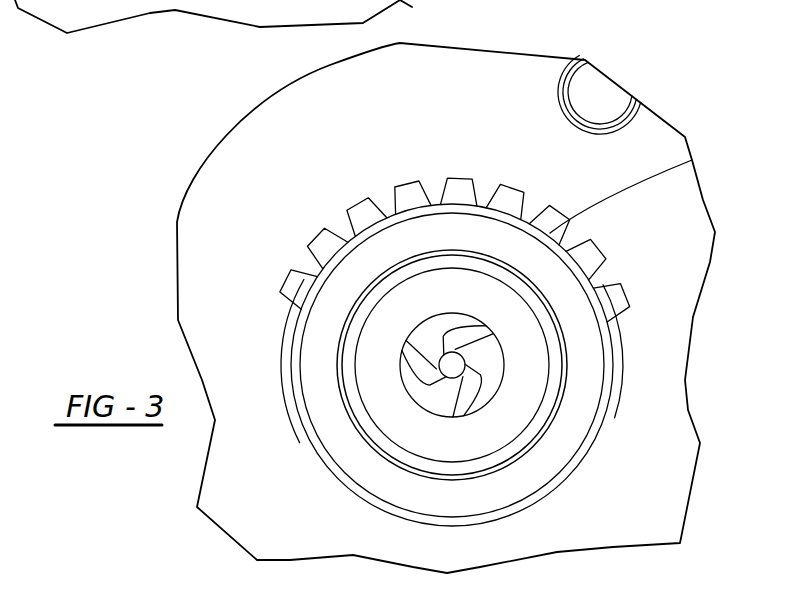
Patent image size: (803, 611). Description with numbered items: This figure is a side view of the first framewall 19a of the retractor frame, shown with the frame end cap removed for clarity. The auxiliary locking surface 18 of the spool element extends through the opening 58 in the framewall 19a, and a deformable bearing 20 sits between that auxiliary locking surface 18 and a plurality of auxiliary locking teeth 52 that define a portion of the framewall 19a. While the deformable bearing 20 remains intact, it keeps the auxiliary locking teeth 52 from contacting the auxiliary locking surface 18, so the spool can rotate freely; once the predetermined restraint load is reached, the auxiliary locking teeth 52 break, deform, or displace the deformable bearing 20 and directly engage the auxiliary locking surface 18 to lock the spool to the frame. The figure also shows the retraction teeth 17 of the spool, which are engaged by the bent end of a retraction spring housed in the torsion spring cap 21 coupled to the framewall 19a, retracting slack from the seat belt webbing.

The torsion spring cap 21 is at (148, 0).
The first framewall 19a is at (282, 168).
The deformable bearing 20 is at (692, 158).
The auxiliary locking teeth 52 is at (498, 197).
The auxiliary locking surface 18 is at (510, 220).
The retraction teeth 17 is at (465, 412).
The opening 58 is at (292, 415).